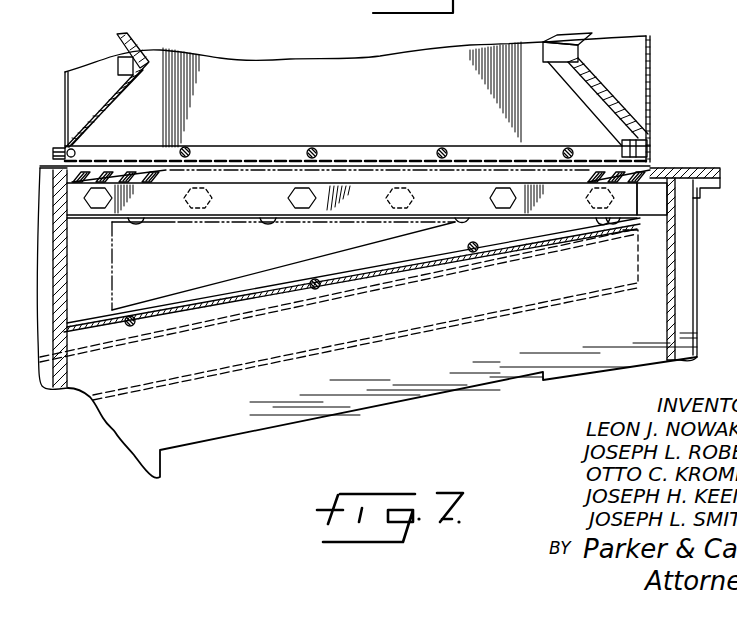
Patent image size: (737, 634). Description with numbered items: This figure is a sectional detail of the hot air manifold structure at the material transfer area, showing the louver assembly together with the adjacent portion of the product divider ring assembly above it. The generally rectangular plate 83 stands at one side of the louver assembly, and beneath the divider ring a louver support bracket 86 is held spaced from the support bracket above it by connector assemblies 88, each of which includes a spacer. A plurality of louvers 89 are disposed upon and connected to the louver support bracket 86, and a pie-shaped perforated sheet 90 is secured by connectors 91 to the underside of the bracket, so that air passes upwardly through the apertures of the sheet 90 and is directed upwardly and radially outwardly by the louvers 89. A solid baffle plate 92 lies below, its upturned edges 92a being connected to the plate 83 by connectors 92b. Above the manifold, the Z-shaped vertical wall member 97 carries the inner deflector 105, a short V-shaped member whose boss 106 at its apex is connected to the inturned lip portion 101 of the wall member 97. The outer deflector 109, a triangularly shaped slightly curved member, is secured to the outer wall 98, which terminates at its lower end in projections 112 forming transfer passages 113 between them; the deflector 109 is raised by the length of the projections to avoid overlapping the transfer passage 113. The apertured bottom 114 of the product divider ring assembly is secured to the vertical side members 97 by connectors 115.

The plate 83 is at (325, 392).
The louver support bracket 86 is at (265, 192).
The connector assembly 88 is at (302, 207).
The louver 89 is at (150, 173).
The pie-shaped perforated sheet 90 is at (462, 218).
The connector 91 is at (137, 223).
The solid baffle plate 92 is at (185, 326).
The upturned edge 92a is at (252, 292).
The connector 92b is at (317, 288).
The Z-shaped vertical wall member 97 is at (338, 74).
The outer wall 98 is at (650, 70).
The inturned lip portion 101 is at (65, 113).
The inner deflector 105 is at (117, 35).
The boss 106 is at (118, 60).
The outer deflector 109 is at (560, 40).
The projection 112 is at (653, 158).
The transfer passage 113 is at (648, 145).
The bottom 114 is at (385, 160).
The connector 115 is at (480, 125).